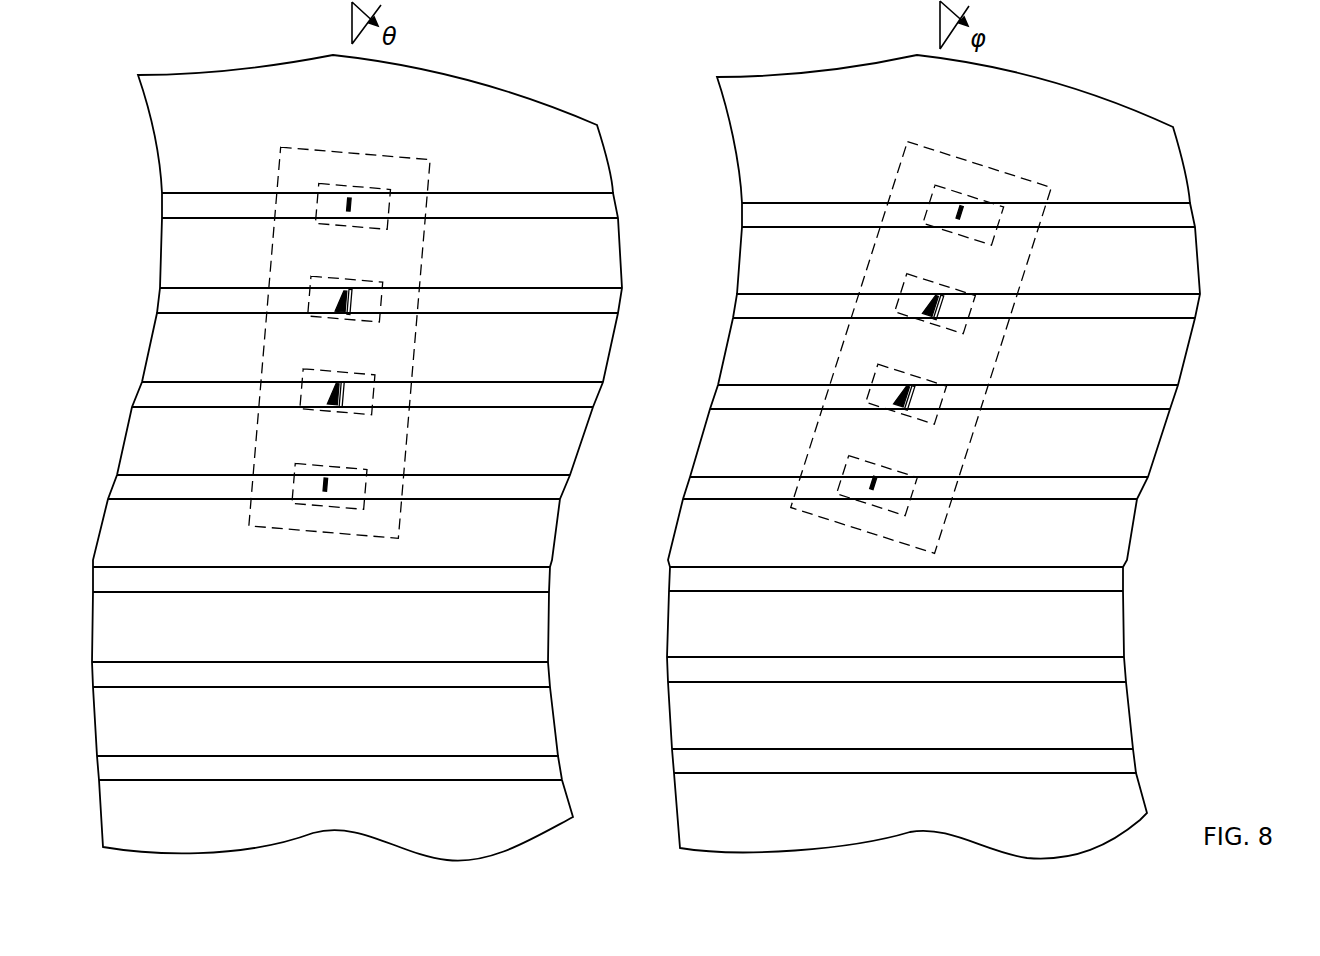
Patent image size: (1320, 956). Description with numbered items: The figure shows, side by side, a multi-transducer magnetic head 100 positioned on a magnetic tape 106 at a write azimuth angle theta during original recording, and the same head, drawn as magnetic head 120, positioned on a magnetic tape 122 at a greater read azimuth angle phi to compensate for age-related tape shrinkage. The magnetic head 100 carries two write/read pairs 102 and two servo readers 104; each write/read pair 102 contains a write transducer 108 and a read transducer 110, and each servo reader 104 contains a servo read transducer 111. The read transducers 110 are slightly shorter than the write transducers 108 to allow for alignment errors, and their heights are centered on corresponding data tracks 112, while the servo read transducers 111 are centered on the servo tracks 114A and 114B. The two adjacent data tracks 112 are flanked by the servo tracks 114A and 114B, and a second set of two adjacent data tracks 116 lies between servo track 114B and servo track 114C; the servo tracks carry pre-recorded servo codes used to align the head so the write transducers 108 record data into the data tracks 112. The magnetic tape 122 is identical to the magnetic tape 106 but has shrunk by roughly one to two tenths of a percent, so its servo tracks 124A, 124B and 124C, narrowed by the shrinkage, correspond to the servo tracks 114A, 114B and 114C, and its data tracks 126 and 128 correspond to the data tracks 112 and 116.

The magnetic head 100 is at (427, 175).
The write/read pair 102 is at (312, 280).
The servo reader 104 is at (318, 185).
The magnetic tape 106 is at (503, 95).
The write transducer 108 is at (351, 314).
The read transducer 110 is at (342, 306).
The servo read transducer 111 is at (351, 210).
The data track 112 is at (377, 347).
The servo track 114A is at (390, 206).
The servo track 114B is at (339, 490).
The servo track 114C is at (329, 770).
The data track 116 is at (321, 628).
The magnetic head 120 is at (1018, 177).
The magnetic tape 122 is at (1083, 97).
The servo track 124A is at (968, 217).
The servo track 124B is at (915, 491).
The servo track 124C is at (904, 763).
The data track 126 is at (955, 353).
The data track 128 is at (896, 625).